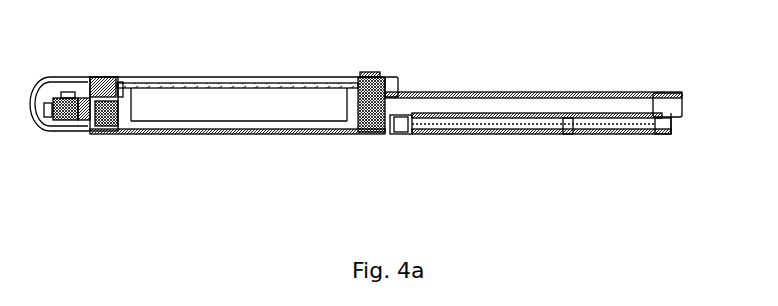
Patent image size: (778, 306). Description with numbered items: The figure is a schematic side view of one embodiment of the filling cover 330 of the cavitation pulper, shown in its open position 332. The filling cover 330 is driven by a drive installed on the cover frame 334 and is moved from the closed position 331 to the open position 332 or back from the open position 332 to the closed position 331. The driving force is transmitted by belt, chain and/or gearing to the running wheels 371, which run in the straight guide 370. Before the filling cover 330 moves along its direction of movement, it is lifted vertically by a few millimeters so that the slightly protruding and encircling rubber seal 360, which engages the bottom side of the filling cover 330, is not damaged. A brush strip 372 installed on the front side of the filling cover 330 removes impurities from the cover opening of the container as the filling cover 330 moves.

The filling cover 330 is at (560, 121).
The closed position 331 is at (670, 137).
The open position 332 is at (67, 106).
The cover frame 334 is at (88, 124).
The protruding and encircling rubber seal 360 is at (519, 89).
The straight guide 370 is at (653, 88).
The running wheels 371 is at (380, 134).
The brush strip 372 is at (404, 88).